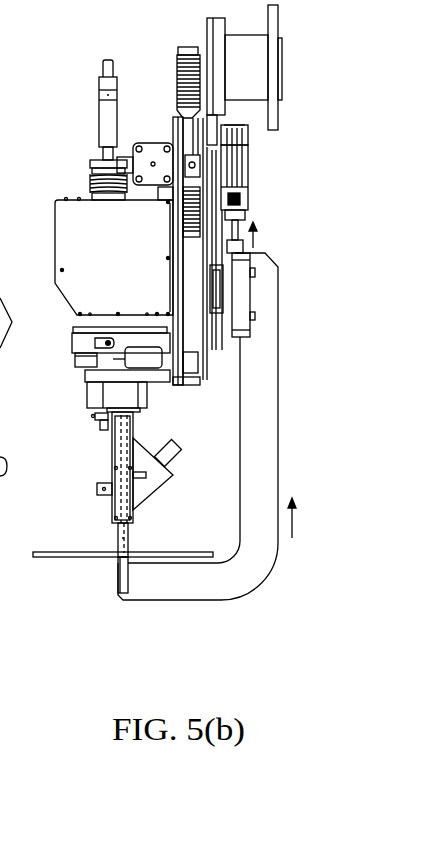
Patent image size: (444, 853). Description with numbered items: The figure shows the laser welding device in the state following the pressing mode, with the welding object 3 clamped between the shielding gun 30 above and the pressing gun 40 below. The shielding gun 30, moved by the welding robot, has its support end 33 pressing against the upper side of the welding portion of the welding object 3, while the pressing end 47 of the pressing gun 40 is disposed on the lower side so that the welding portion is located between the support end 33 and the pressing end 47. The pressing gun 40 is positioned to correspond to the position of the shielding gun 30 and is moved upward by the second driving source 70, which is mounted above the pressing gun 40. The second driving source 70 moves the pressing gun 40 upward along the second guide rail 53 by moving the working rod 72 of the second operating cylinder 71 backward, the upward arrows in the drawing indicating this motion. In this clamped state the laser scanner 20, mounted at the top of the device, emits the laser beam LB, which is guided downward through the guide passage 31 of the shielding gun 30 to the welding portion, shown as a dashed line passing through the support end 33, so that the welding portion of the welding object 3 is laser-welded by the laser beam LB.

The laser scanner 20 is at (73, 200).
The second driving source 70 is at (277, 166).
The second operating cylinder 71 is at (250, 152).
The working rod 72 is at (240, 227).
The second guide rail 53 is at (220, 344).
The pressing gun 40 is at (285, 430).
The shielding gun 30 is at (112, 467).
The guide passage 31 is at (118, 502).
The laser beam LB is at (120, 440).
The support end 33 is at (128, 557).
The pressing end 47 is at (112, 542).
The welding object 3 is at (37, 562).